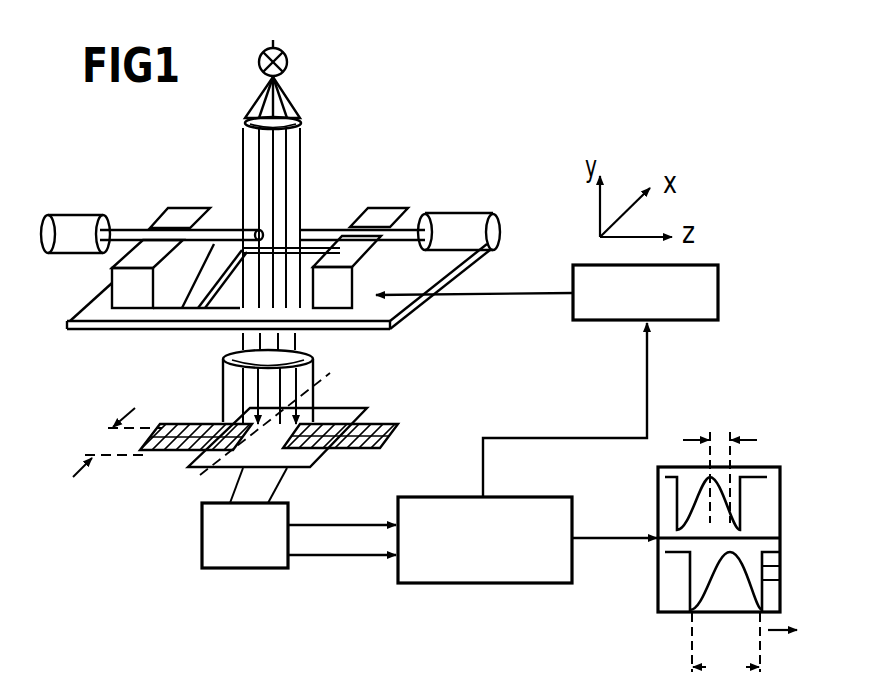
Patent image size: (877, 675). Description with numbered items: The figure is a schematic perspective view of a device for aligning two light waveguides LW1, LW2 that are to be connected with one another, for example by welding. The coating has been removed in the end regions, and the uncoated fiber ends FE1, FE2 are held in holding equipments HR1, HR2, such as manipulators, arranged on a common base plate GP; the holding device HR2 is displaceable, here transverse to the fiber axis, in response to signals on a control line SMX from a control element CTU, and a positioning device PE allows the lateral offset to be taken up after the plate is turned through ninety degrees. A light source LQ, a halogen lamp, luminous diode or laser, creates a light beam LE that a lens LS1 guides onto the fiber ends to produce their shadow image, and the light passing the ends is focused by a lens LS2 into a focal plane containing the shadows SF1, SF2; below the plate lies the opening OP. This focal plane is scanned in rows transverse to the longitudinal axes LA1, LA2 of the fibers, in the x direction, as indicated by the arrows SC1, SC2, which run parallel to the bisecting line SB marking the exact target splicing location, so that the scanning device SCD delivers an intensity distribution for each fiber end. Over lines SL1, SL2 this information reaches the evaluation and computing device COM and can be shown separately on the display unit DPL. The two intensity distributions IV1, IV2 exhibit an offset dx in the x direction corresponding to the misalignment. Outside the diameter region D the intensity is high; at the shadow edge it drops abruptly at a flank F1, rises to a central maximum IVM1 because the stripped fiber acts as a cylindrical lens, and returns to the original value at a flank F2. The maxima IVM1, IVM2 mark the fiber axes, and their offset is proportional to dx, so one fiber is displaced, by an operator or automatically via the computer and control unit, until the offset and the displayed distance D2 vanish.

The light source LQ is at (272, 59).
The lens LS1 is at (298, 118).
The light beam LE is at (262, 147).
The light waveguide LW1 is at (78, 215).
The holding equipment HR1 is at (185, 190).
The fiber end FE1 is at (240, 229).
The fiber end FE2 is at (318, 229).
The holding equipment HR2 is at (378, 187).
The light waveguide LW2 is at (462, 215).
The positioning device PE is at (102, 284).
The base plate GP is at (90, 313).
The opening OP is at (228, 297).
The lens LS2 is at (314, 346).
The bisecting line SB is at (220, 488).
The shadow SF1 is at (206, 420).
The shadow SF2 is at (345, 430).
The diameter region D is at (117, 442).
The longitudinal axis LA1 is at (140, 454).
The longitudinal axis LA2 is at (380, 450).
The scanning arrow SC1 is at (230, 470).
The scanning arrow SC2 is at (284, 470).
The scanning device SCD is at (245, 555).
The line SL1 is at (348, 557).
The line SL2 is at (361, 523).
The evaluation and computing device COM is at (527, 453).
The control element CTU is at (645, 292).
The control line SMX is at (498, 292).
The display unit DPL is at (662, 572).
The maximum IVM2 is at (710, 478).
The intensity distribution IV2 is at (724, 500).
The offset dx is at (720, 461).
The maximum IVM1 is at (763, 552).
The intensity distribution IV1 is at (765, 580).
The flank F2 is at (762, 572).
The flank F1 is at (692, 560).
The distance D on display D2 is at (726, 644).
The x direction x is at (782, 646).